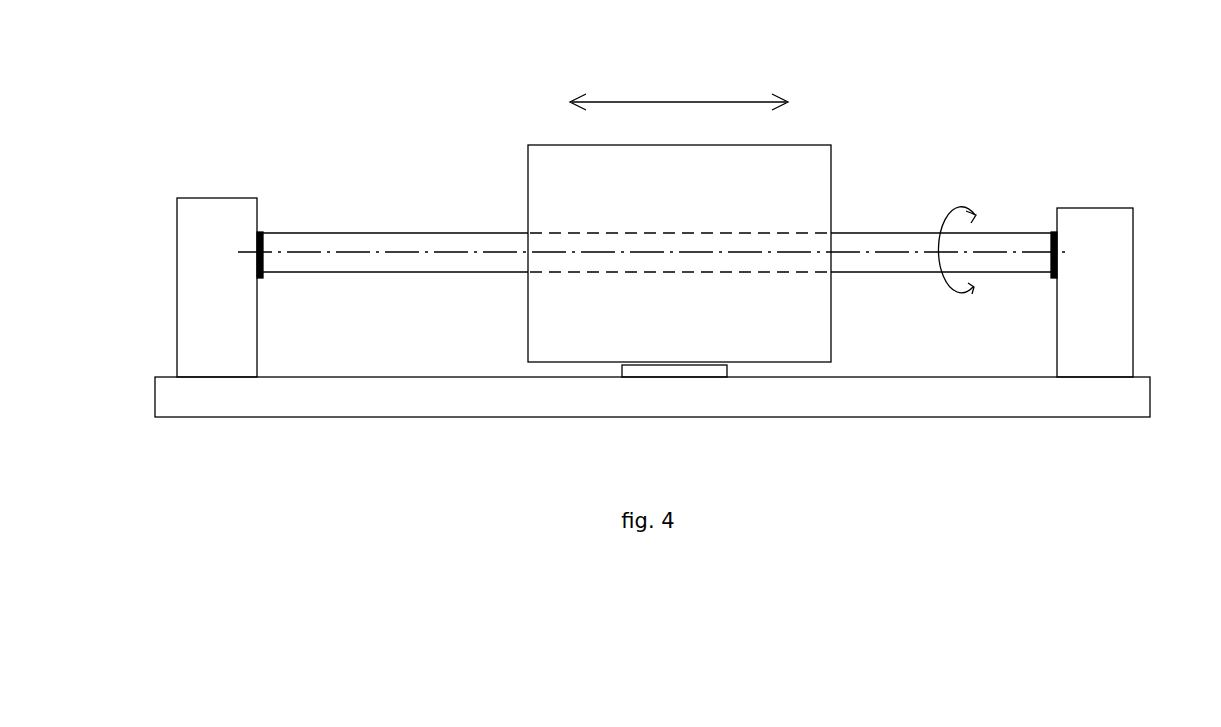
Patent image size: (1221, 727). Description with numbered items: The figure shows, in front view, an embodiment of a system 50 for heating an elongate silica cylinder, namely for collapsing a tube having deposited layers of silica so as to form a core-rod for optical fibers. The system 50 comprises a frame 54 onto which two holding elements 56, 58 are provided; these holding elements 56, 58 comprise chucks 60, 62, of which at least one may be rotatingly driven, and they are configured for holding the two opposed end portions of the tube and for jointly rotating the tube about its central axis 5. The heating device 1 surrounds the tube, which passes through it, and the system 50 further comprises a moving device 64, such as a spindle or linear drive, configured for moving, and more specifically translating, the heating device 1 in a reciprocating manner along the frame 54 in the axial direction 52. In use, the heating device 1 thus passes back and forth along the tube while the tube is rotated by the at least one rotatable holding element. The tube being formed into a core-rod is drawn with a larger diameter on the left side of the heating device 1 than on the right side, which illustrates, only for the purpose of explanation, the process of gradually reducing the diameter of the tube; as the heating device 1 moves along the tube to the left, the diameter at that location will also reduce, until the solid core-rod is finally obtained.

The system 50 is at (1099, 114).
The heating device 1 is at (840, 124).
The central axis 5 is at (403, 255).
The axial direction 52 is at (688, 100).
The frame 54 is at (493, 400).
The holding element 56 is at (217, 208).
The holding element 58 is at (1097, 227).
The chuck 60 is at (265, 219).
The chuck 62 is at (1048, 226).
The moving device 64 is at (697, 382).